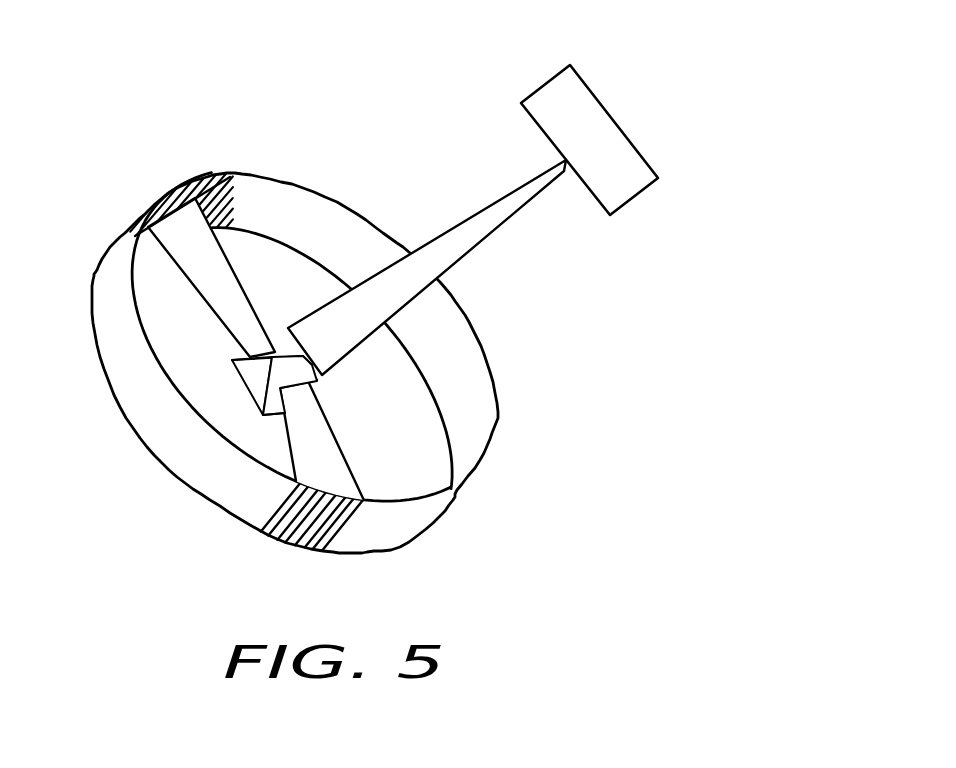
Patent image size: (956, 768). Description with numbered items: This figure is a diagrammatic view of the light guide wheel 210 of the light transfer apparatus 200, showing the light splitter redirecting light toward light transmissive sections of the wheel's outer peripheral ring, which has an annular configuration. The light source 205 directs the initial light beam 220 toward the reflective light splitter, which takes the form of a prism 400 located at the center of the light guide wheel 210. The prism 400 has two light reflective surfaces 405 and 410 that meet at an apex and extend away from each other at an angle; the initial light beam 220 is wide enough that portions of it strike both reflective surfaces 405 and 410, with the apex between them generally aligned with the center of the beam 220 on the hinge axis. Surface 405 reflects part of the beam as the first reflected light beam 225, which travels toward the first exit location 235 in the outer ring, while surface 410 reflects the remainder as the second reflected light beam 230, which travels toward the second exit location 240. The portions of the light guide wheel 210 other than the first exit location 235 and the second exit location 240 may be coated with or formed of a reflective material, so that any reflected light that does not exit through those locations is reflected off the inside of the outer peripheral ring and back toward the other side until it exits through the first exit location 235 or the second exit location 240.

The light transfer apparatus 200 is at (381, 88).
The light source 205 is at (592, 96).
The light guide wheel 210 is at (485, 348).
The initial light beam 220 is at (460, 222).
The first reflected light beam 225 is at (230, 255).
The second reflected light beam 230 is at (290, 432).
The first exit location 235 is at (183, 182).
The second exit location 240 is at (313, 517).
The prism 400 is at (260, 378).
The light reflective surface 405 is at (247, 350).
The light reflective surface 410 is at (320, 382).